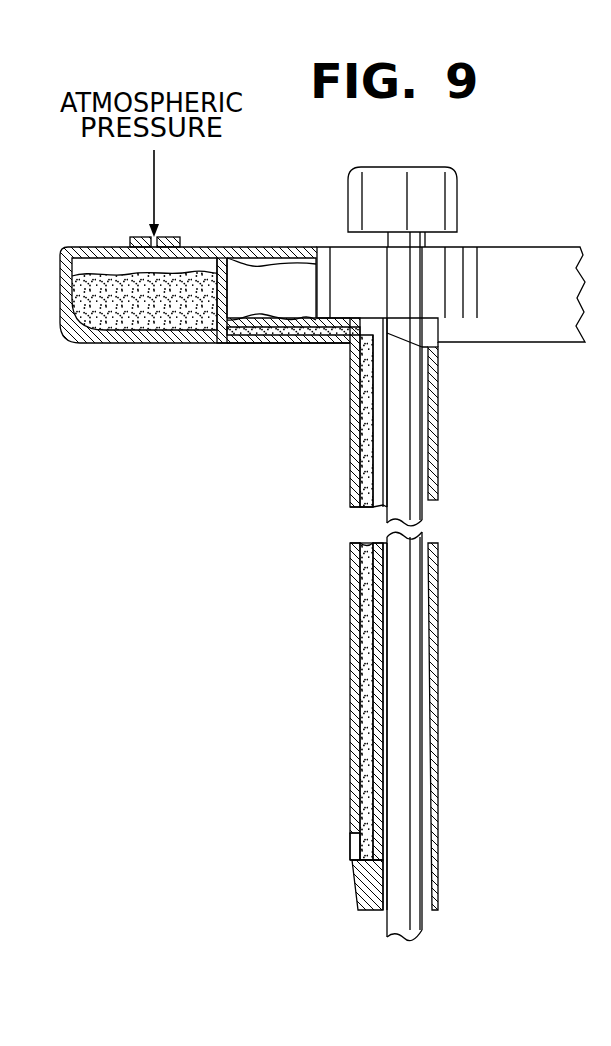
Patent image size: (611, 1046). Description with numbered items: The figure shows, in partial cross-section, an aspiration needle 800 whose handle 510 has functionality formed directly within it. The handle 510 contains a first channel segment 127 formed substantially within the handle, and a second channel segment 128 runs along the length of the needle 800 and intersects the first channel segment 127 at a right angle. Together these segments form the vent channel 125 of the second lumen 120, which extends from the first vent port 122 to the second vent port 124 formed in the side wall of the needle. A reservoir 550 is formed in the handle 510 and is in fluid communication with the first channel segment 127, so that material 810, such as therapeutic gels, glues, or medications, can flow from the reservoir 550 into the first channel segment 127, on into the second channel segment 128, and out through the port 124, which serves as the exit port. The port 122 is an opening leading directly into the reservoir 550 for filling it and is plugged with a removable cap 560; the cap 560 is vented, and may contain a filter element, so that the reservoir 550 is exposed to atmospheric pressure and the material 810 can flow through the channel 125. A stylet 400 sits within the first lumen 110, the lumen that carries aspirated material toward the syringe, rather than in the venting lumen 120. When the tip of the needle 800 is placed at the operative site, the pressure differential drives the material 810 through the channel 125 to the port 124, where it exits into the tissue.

The first lumen 110 is at (420, 664).
The second lumen 120 is at (378, 778).
The first vent port 122 is at (226, 270).
The second vent port 124 is at (356, 818).
The vent channel 125 is at (362, 737).
The first channel segment 127 is at (280, 328).
The second channel segment 128 is at (357, 596).
The stylet 400 is at (442, 193).
The handle 510 is at (547, 323).
The reservoir 550 is at (98, 262).
The removable cap 560 is at (168, 258).
The needle 800 is at (470, 505).
The material 810 is at (132, 317).